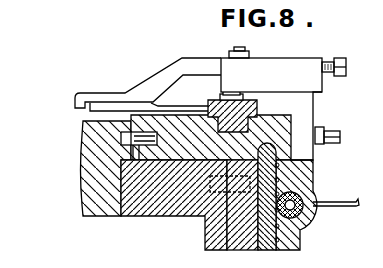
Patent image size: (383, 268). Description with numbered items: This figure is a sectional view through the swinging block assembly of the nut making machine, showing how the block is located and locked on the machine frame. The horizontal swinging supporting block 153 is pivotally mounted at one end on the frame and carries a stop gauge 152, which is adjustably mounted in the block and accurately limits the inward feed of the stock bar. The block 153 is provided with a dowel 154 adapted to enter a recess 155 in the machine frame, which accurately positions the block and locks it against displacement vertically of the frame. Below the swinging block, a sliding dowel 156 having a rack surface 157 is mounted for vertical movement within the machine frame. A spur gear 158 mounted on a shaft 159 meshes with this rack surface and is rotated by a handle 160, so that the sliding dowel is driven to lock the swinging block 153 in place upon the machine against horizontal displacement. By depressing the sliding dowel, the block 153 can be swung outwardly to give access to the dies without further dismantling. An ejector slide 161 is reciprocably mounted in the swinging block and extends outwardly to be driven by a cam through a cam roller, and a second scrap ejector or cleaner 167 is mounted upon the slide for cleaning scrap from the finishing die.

The stop gauge 152 is at (166, 66).
The supporting block 153 is at (184, 144).
The dowel 154 is at (132, 150).
The recess 155 is at (118, 139).
The sliding dowel 156 is at (267, 250).
The rack surface 157 is at (277, 177).
The spur gear 158 is at (304, 213).
The shaft 159 is at (257, 226).
The handle 160 is at (339, 202).
The ejector slide 161 is at (256, 111).
The second scrap ejector or cleaner 167 is at (167, 101).